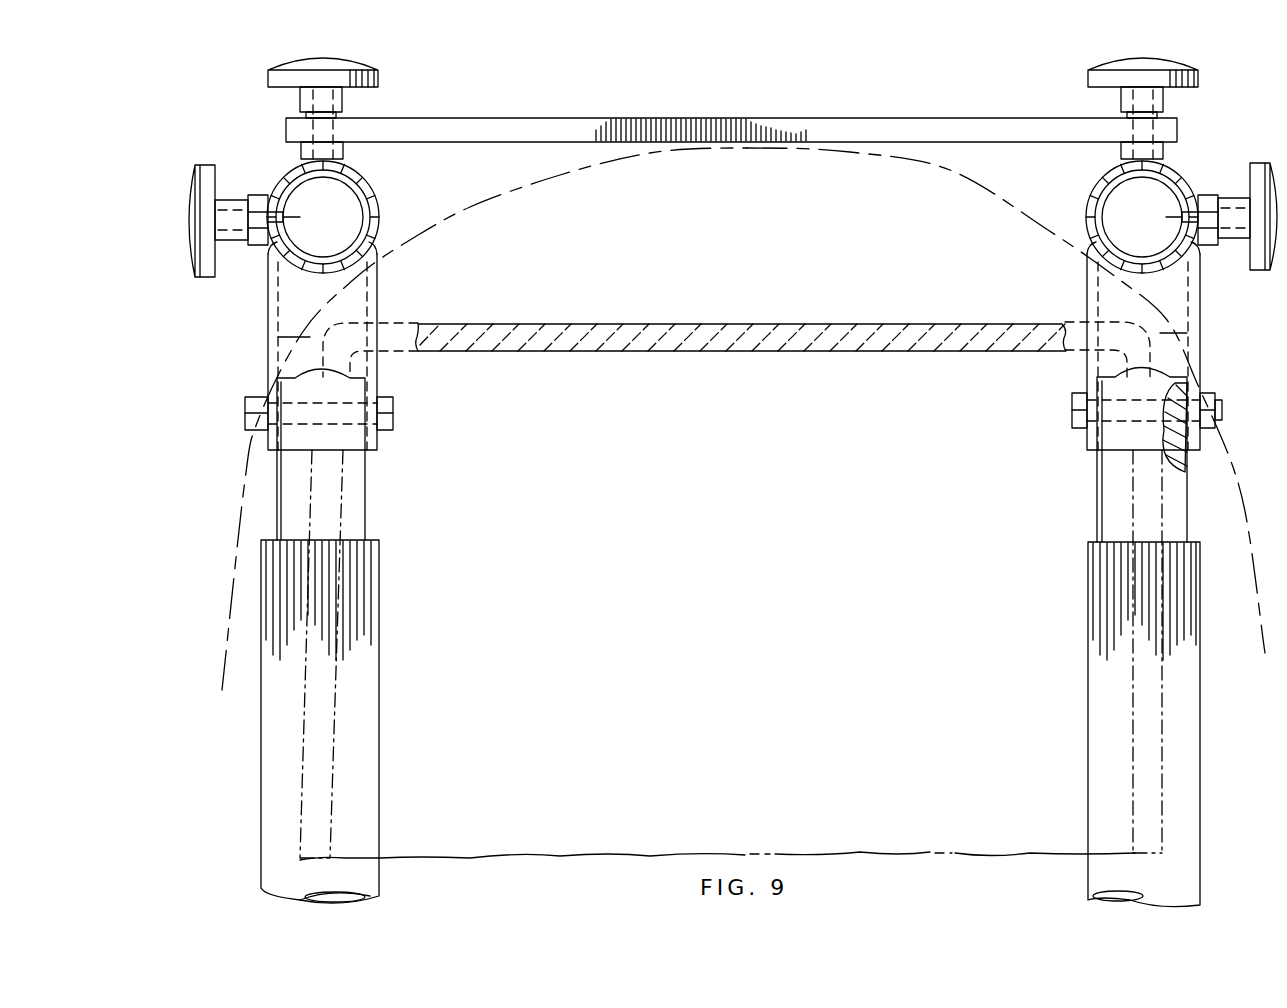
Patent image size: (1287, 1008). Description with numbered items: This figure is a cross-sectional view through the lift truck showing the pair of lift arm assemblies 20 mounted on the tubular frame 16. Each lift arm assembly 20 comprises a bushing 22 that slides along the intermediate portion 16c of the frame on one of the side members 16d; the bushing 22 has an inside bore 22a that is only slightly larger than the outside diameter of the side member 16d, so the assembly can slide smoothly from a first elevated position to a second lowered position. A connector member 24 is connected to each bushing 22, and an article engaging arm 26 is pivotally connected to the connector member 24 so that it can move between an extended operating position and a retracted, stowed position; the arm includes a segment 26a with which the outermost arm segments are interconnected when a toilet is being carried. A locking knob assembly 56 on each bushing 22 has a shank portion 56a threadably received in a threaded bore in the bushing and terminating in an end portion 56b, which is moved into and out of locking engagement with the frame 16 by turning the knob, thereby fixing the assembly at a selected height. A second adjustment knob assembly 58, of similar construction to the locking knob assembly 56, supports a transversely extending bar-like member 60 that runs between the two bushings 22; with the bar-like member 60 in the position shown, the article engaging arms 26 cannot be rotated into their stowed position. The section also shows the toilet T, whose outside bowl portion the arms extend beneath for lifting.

The tubular frame 16 is at (308, 264).
The intermediate portion 16c is at (1196, 258).
The side members 16d is at (388, 230).
The lift arm assemblies 20 is at (412, 605).
The bushing 22 is at (358, 178).
The inside bore 22a is at (380, 201).
The connector member 24 is at (366, 292).
The article engaging arm 26 is at (380, 670).
The segment 26a is at (380, 752).
The locking knob assembly 56 is at (208, 277).
The shank portion 56a is at (253, 197).
The end portion 56b is at (300, 217).
The second adjustment knob assembly 58 is at (380, 78).
The bar-like member 60 is at (656, 118).
The toilet T is at (766, 323).